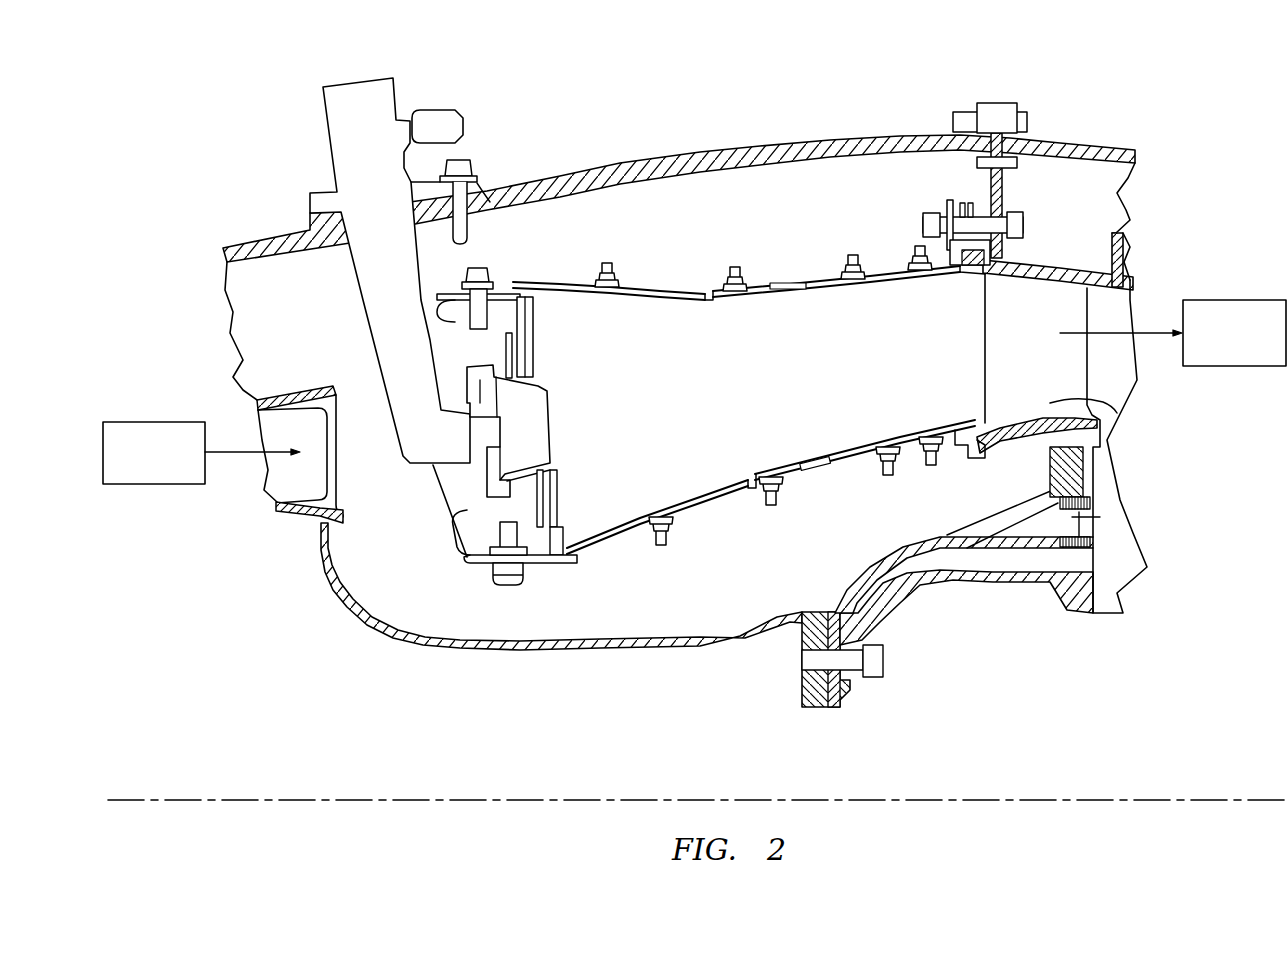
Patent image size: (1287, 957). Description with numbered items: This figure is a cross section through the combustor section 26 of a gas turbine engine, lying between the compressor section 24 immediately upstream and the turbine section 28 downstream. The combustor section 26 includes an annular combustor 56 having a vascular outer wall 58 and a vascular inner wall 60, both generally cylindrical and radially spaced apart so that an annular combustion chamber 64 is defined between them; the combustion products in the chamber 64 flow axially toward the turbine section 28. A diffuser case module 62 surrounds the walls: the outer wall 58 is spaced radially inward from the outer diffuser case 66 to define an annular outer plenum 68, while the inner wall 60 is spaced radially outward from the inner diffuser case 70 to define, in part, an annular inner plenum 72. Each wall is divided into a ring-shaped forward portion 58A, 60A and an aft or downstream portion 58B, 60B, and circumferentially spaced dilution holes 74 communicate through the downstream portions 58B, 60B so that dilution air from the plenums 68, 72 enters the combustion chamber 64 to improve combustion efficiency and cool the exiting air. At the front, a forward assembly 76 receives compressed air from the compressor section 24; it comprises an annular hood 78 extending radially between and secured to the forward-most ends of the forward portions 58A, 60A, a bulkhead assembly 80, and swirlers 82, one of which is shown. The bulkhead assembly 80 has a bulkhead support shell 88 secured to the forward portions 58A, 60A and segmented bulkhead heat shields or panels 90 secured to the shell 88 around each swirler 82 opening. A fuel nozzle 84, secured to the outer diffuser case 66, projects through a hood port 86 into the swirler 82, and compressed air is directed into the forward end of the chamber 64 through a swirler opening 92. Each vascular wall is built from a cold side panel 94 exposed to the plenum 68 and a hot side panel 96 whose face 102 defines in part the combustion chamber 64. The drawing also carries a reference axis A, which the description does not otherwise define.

The compressor section 24 is at (171, 466).
The combustor section 26 is at (1148, 131).
The turbine section 28 is at (1250, 346).
The annular combustor 56 is at (749, 387).
The vascular outer wall 58 is at (741, 287).
The forward portion of outer wall 58A is at (578, 293).
The aft or downstream portion of outer wall 58B is at (878, 287).
The vascular inner wall 60 is at (776, 478).
The forward portion of inner wall 60A is at (585, 545).
The aft or downstream portion of inner wall 60B is at (887, 443).
The diffuser case module 62 is at (757, 141).
The annular combustion chamber 64 is at (802, 383).
The outer diffuser case 66 is at (853, 132).
The annular outer plenum 68 is at (795, 200).
The inner diffuser case 70 is at (660, 647).
The annular inner plenum 72 is at (760, 605).
The dilution holes 74 is at (797, 280).
The forward assembly 76 is at (587, 278).
The annular hood 78 is at (558, 300).
The bulkhead assembly 80 is at (544, 428).
The swirlers 82 is at (465, 518).
The fuel nozzles 84 is at (380, 157).
The hood port 86 is at (437, 497).
The bulkhead support shell 88 is at (505, 343).
The bulkhead heat shields or panels 90 is at (560, 492).
The swirler opening 92 is at (545, 420).
The cold side panel 94 is at (717, 280).
The hot side panel 96 is at (668, 292).
The face of hot side panel 102 is at (1117, 410).
The engine central longitudinal axis A is at (944, 798).